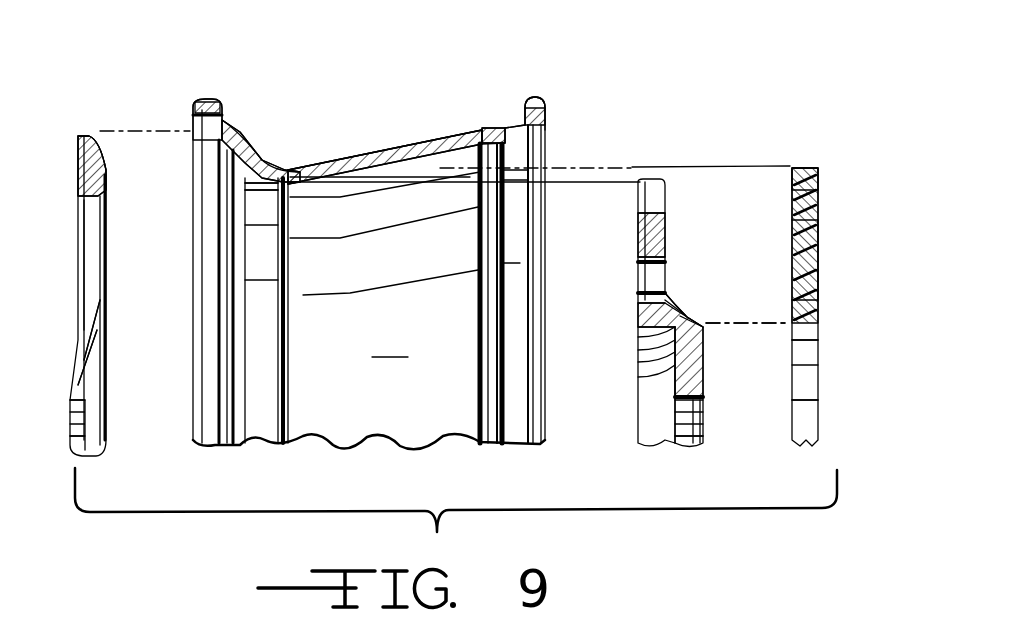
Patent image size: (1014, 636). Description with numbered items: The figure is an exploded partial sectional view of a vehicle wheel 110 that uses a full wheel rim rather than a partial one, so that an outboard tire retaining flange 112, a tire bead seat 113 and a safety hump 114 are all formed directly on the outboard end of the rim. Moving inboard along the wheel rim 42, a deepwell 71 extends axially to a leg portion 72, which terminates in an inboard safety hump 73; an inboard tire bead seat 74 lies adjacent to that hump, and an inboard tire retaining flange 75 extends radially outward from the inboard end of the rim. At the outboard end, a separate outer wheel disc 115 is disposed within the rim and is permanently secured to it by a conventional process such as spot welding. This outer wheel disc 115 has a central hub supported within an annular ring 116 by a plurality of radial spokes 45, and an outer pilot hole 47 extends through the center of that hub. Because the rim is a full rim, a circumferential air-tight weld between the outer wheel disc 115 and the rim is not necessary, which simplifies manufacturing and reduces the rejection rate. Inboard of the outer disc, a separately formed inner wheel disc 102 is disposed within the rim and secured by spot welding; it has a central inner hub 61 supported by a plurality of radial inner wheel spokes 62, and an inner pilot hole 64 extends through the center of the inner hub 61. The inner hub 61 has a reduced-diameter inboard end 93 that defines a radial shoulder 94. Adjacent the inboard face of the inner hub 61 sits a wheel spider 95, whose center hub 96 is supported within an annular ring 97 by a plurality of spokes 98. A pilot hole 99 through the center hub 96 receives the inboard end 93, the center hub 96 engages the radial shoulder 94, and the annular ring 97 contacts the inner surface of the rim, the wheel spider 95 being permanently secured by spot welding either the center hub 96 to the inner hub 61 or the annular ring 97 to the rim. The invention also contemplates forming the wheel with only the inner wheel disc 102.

The vehicle wheel 110 is at (562, 93).
The outboard tire retaining flange 112 is at (222, 120).
The tire bead seat 113 is at (235, 140).
The safety hump 114 is at (262, 128).
The outer wheel disc 115 is at (70, 257).
The annular ring 116 is at (80, 150).
The radial spokes 45 is at (100, 285).
The wheel rim 42 is at (90, 378).
The outer pilot hole 47 is at (118, 446).
The deepwell 71 is at (305, 168).
The leg portion 72 is at (397, 160).
The inboard safety hump 73 is at (490, 128).
The inboard tire bead seat 74 is at (505, 125).
The inboard tire retaining flange 75 is at (555, 125).
The inner wheel spokes 62 is at (640, 195).
The inner wheel disc 102 is at (678, 290).
The radial shoulder 94 is at (690, 310).
The inboard end 93 is at (695, 326).
The inner hub 61 is at (703, 378).
The inner pilot hole 64 is at (710, 412).
The wheel spider 95 is at (830, 236).
The annular ring 97 is at (815, 162).
The spokes 98 is at (805, 262).
The pilot hole 99 is at (832, 365).
The center hub 96 is at (792, 322).